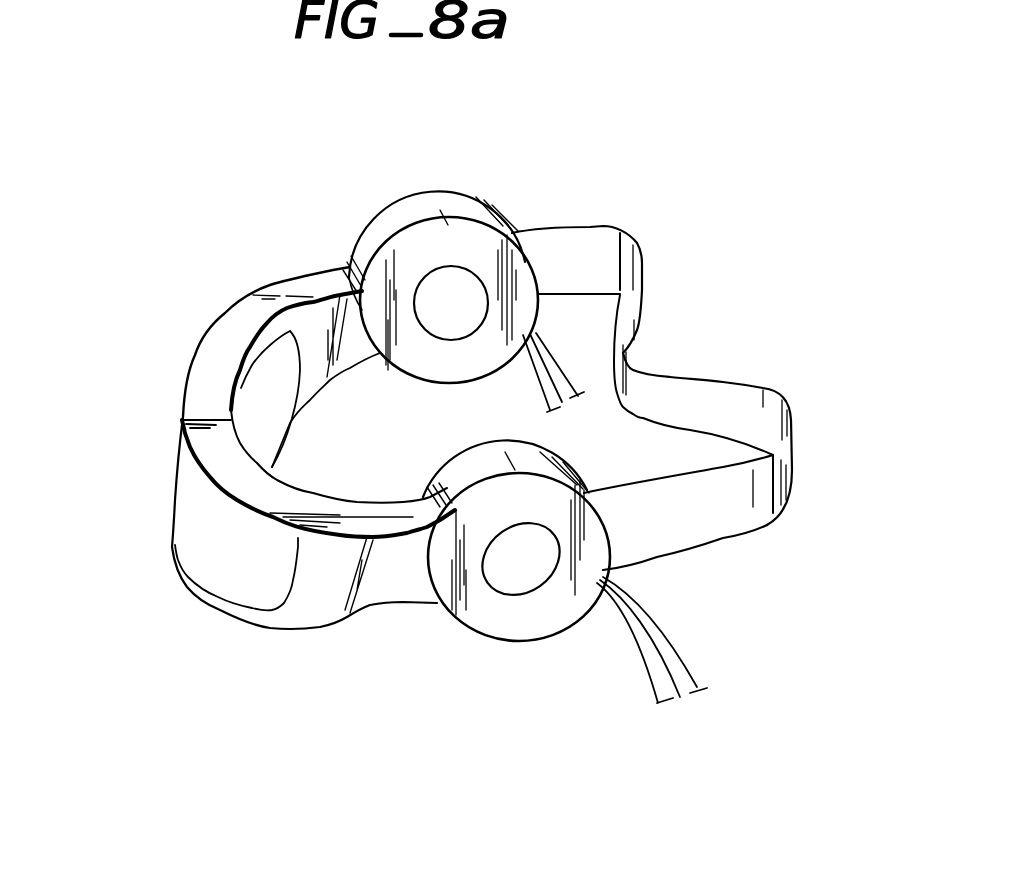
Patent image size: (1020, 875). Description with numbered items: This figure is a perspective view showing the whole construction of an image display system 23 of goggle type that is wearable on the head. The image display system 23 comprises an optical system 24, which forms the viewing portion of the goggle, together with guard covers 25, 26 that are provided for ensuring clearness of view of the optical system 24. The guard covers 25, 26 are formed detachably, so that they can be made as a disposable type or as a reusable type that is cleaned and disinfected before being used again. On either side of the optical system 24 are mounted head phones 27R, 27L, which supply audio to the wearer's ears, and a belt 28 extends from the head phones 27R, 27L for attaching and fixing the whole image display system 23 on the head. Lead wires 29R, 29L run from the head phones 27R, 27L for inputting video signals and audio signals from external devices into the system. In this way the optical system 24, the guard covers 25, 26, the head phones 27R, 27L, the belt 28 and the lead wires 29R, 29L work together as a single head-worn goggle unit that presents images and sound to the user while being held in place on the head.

The image display system 23 is at (177, 310).
The optical system 24 is at (270, 285).
The guard cover 25 is at (188, 503).
The guard cover 26 is at (255, 390).
The head phone 27R is at (381, 208).
The head phone 27L is at (533, 640).
The belt 28 is at (618, 228).
The lead wire 29R is at (542, 377).
The lead wire 29L is at (682, 648).